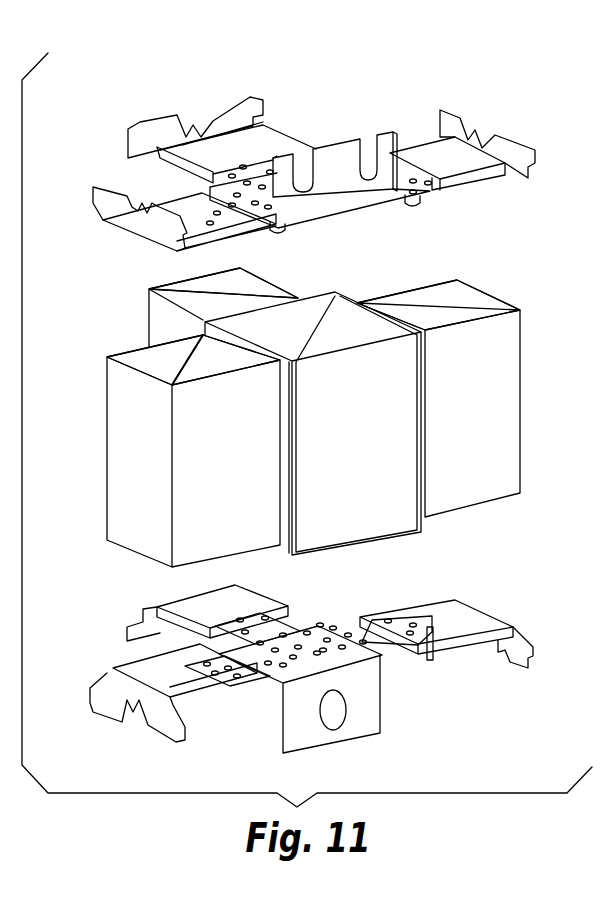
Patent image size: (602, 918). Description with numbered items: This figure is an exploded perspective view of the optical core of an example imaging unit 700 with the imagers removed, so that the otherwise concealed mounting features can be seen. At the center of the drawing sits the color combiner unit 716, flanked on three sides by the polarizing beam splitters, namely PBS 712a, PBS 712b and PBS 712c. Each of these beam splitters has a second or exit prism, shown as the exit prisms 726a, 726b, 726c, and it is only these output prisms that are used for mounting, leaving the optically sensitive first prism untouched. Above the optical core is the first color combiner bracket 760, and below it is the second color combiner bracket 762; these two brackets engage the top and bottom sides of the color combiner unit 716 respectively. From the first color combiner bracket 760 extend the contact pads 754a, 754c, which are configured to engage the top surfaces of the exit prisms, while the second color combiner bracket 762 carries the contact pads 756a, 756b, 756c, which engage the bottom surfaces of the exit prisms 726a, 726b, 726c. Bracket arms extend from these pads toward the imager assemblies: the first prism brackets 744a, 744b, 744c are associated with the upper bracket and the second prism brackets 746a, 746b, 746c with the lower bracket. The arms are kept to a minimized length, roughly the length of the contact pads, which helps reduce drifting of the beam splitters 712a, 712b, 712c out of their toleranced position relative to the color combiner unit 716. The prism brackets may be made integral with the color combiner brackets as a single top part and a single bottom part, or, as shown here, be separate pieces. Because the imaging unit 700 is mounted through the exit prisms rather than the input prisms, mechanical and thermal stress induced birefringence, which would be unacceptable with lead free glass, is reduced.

The imaging unit 700 is at (342, 82).
The PBS 712a is at (108, 438).
The PBS 712b is at (150, 286).
The PBS 712c is at (524, 412).
The color combiner unit 716 is at (387, 517).
The second or exit prism 726a is at (197, 540).
The second or exit prism 726b is at (175, 307).
The second or exit prism 726c is at (477, 488).
The first prism bracket 744a is at (122, 215).
The first prism bracket 744b is at (227, 100).
The first prism bracket 744c is at (450, 110).
The second prism bracket 746a is at (205, 705).
The second prism bracket 746b is at (177, 627).
The second prism bracket 746c is at (470, 647).
The contact pad 754a is at (275, 232).
The contact pad 754c is at (410, 208).
The contact pad 756a is at (223, 665).
The contact pad 756b is at (288, 590).
The contact pad 756c is at (430, 640).
The first color combiner bracket 760 is at (303, 172).
The second color combiner bracket 762 is at (320, 625).